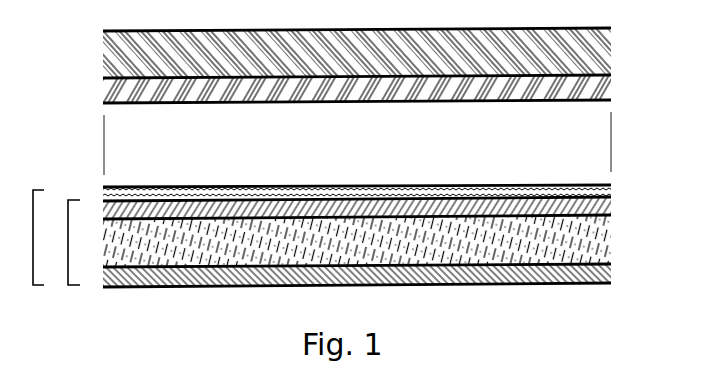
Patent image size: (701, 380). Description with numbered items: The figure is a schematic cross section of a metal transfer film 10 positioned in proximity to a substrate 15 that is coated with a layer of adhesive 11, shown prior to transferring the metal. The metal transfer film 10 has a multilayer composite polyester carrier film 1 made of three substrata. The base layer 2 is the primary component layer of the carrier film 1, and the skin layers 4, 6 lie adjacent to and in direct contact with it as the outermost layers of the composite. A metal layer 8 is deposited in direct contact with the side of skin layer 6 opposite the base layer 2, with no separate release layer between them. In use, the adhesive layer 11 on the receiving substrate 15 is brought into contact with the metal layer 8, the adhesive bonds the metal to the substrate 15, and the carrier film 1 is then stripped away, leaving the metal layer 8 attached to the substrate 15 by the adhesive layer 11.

The multilayer composite polyester carrier film 1 is at (70, 200).
The base layer 2 is at (611, 244).
The skin layer 4 is at (611, 268).
The skin layer 6 is at (608, 204).
The metal layer 8 is at (611, 191).
The metal transfer film 10 is at (33, 188).
The adhesive layer 11 is at (612, 91).
The substrate 15 is at (612, 60).